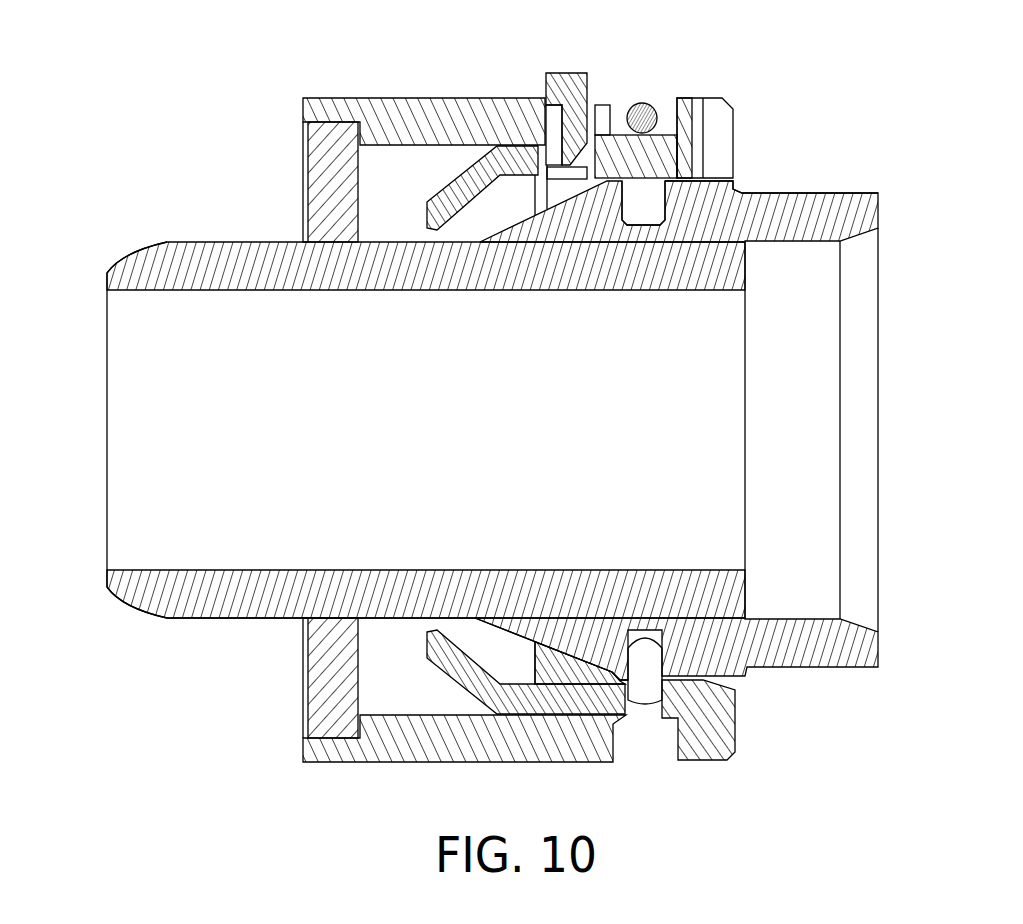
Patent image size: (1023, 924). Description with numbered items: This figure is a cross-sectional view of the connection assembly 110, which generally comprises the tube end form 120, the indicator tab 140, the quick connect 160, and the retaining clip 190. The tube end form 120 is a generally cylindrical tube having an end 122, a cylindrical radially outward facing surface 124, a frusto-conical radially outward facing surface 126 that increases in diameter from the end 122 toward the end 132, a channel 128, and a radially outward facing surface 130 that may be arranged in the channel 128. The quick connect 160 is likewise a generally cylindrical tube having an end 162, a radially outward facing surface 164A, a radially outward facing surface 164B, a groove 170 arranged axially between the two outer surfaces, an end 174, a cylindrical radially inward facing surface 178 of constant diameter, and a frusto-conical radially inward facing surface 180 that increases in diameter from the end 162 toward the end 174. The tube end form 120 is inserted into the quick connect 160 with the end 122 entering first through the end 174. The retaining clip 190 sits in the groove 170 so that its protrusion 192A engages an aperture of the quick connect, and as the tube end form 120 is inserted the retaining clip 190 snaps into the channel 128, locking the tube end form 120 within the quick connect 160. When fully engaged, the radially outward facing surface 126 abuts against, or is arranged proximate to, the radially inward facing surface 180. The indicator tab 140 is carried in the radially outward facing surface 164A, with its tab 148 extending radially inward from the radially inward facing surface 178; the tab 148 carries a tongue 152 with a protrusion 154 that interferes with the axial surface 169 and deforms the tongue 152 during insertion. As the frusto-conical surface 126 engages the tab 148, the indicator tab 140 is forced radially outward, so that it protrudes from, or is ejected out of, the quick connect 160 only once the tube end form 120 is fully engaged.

The connection assembly 110 is at (866, 86).
The tube end form 120 is at (145, 260).
The end 122 is at (107, 274).
The radially outward facing surface 124 is at (225, 620).
The radially outward facing surface 126 is at (512, 640).
The channel 128 is at (645, 208).
The radially outward facing surface 130 is at (665, 214).
The end 132 is at (882, 207).
The indicator tab 140 is at (567, 73).
The tab 148 is at (556, 106).
The tongue 152 is at (553, 125).
The protrusion 154 is at (577, 137).
The quick connect 160 is at (330, 97).
The end 162 is at (303, 110).
The radially outward facing surface 164A is at (367, 98).
The radially outward facing surface 164B is at (605, 105).
The axial surface 169 is at (655, 177).
The groove 170 is at (648, 753).
The end 174 is at (736, 724).
The radially inward facing surface 178 is at (563, 672).
The radially inward facing surface 180 is at (458, 632).
The retaining clip 190 is at (645, 104).
The protrusion 192A is at (650, 640).